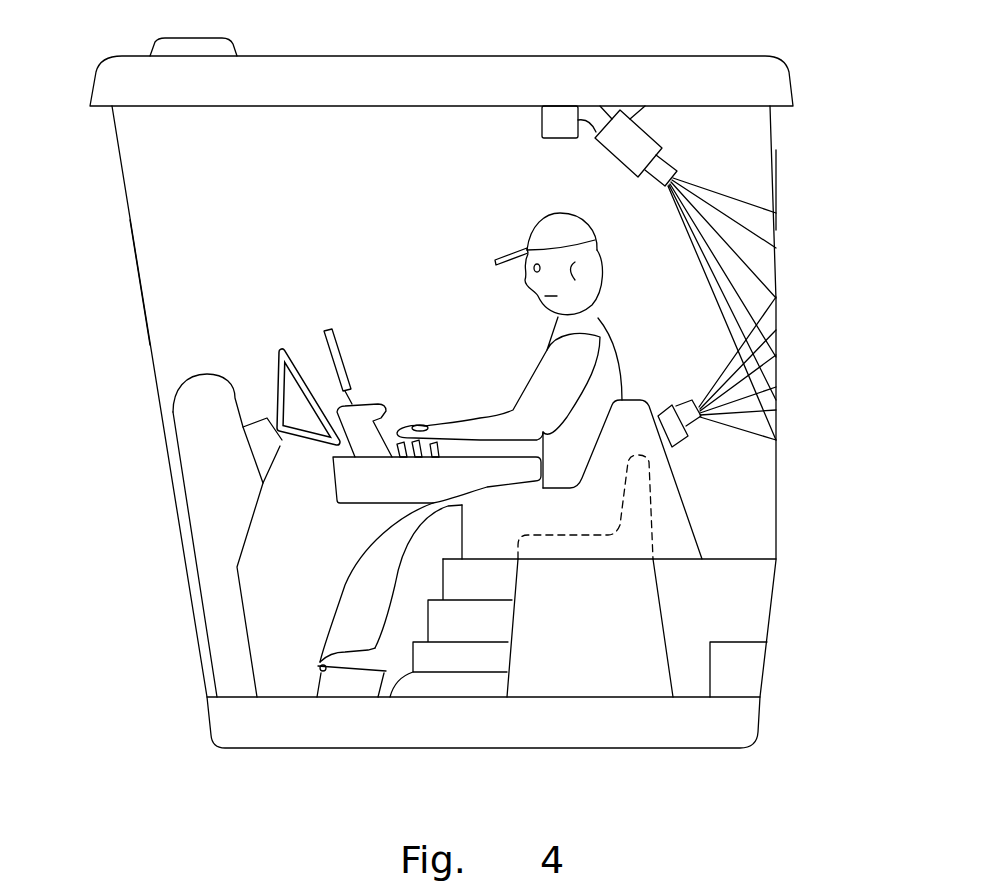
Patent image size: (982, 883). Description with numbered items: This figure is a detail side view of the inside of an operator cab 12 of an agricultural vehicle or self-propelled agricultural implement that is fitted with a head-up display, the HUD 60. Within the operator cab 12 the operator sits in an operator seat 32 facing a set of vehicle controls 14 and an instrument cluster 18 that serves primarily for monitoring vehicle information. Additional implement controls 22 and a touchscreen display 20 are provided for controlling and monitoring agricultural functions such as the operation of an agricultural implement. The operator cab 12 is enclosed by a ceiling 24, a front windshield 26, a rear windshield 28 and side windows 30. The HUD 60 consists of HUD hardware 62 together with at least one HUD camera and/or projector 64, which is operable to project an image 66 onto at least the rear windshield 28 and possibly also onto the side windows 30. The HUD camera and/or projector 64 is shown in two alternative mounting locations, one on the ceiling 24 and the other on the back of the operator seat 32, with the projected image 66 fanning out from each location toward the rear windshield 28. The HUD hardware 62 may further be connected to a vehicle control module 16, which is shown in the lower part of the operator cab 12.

The operator cab 12 is at (120, 175).
The vehicle controls 14 is at (295, 360).
The vehicle control module 16 is at (743, 667).
The instrument cluster 18 is at (238, 401).
The touchscreen display 20 is at (340, 352).
The implement controls 22 is at (392, 437).
The ceiling 24 is at (367, 107).
The front windshield 26 is at (144, 313).
The rear windshield 28 is at (777, 183).
The side windows 30 is at (270, 157).
The operator seat 32 is at (583, 563).
The HUD 60 is at (674, 260).
The HUD hardware 62 is at (557, 130).
The HUD camera and/or projector 64 is at (663, 145).
The image 66 is at (777, 232).